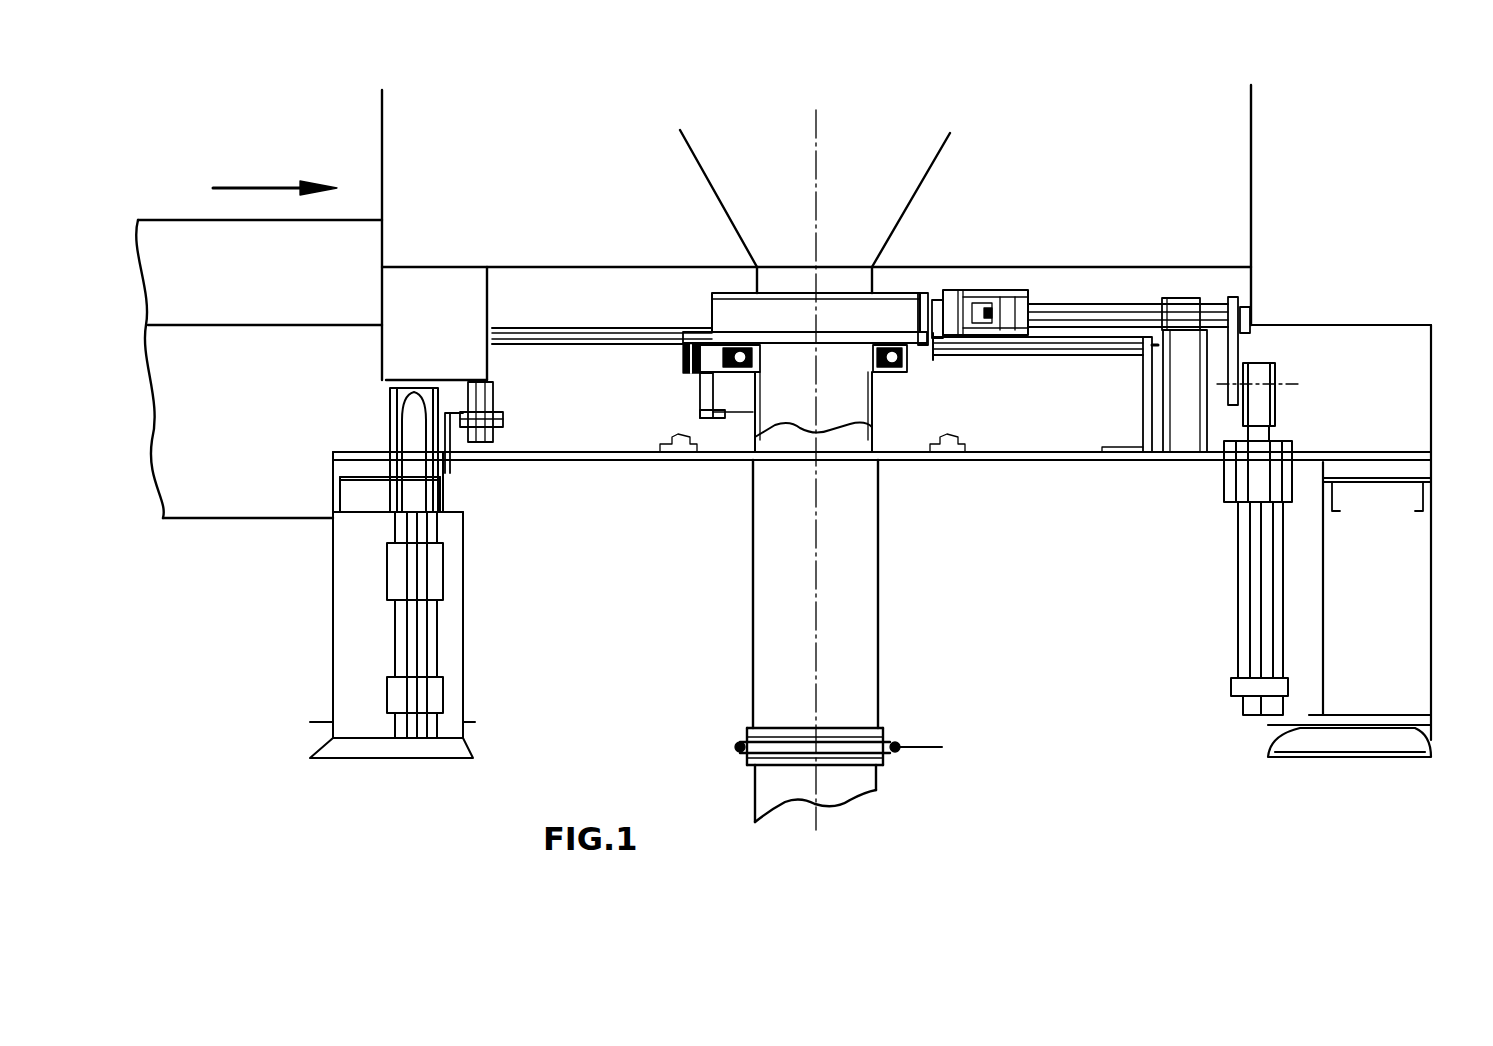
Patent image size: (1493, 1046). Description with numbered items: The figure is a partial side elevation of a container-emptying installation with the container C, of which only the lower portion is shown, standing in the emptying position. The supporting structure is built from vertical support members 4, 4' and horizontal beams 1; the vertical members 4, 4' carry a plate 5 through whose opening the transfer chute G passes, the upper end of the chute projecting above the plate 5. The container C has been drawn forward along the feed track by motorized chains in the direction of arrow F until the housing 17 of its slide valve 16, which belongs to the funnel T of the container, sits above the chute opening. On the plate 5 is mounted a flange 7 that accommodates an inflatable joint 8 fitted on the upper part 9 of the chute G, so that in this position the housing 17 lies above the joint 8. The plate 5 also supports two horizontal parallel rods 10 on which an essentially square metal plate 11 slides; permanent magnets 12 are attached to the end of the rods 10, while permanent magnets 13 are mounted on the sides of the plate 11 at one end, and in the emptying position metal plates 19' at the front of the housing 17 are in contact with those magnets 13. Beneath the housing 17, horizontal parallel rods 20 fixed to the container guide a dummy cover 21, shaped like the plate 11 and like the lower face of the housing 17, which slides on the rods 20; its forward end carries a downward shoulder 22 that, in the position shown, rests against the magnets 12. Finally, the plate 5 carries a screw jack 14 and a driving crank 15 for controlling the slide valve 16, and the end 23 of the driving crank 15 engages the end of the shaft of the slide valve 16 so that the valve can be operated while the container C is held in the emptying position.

The horizontal beam 1 is at (1391, 481).
The vertical support member 4 is at (1360, 541).
The vertical support member 4' is at (387, 570).
The plate 5 is at (1042, 460).
The flange 7 is at (700, 385).
The inflatable joint 8 is at (910, 363).
The upper part of the chute 9 is at (843, 372).
The horizontal parallel rod 10 is at (1137, 352).
The metal plate 11 is at (1053, 353).
The permanent magnet 12 is at (677, 330).
The permanent magnet 13 is at (967, 298).
The screw jack 14 is at (1261, 605).
The driving crank 15 is at (1242, 343).
The slide valve 16 is at (873, 310).
The housing 17 is at (923, 310).
The metal plate 19' is at (959, 273).
The horizontal parallel rod 20 is at (708, 333).
The dummy cover 21 is at (627, 345).
The downward shoulder 22 is at (682, 352).
The end of the driving crank 23 is at (1020, 300).
The container C is at (1220, 197).
The arrow indicating forward direction F is at (275, 170).
The funnel T is at (930, 178).
The transfer chute G is at (880, 620).